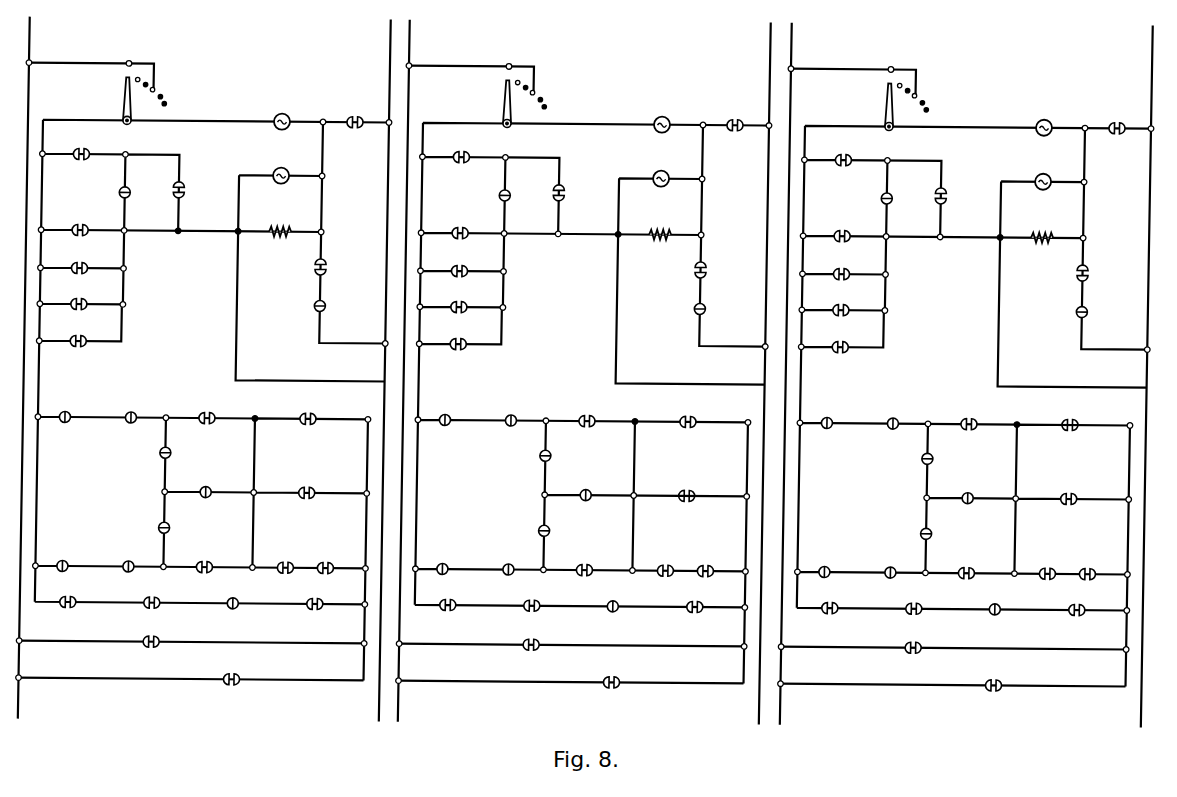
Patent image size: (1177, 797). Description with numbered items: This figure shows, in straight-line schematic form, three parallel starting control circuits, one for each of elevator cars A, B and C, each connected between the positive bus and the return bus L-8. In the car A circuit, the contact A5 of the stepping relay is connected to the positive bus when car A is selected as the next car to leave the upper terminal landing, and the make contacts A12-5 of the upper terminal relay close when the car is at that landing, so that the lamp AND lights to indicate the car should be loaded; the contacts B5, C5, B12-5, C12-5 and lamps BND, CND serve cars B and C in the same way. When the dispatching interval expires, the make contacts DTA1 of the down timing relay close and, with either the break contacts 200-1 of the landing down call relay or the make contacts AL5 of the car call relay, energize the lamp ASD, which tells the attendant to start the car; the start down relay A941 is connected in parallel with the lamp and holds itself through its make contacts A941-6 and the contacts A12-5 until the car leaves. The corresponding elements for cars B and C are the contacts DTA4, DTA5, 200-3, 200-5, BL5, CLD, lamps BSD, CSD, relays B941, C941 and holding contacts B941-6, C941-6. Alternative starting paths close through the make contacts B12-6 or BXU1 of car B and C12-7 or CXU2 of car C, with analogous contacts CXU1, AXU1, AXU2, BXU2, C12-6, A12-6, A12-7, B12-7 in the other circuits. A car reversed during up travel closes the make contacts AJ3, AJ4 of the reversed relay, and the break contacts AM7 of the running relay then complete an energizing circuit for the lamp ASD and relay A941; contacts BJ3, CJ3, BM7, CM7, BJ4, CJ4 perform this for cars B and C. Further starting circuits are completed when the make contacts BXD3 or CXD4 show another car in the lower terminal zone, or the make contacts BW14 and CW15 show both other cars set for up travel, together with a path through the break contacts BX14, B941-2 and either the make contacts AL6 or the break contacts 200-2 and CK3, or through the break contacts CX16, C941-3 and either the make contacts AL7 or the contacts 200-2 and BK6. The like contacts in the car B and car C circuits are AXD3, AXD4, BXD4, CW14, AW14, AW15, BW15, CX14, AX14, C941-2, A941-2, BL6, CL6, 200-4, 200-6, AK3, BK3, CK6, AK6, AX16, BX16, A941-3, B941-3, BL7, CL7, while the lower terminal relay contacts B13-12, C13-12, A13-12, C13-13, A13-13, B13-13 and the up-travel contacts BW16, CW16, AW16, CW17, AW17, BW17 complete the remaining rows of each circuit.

The bus L-8 is at (389, 31).
The contact of the stepping relay A5 is at (110, 89).
The selector switch B5 is at (508, 95).
The selector switch C5 is at (890, 98).
The lamp AND is at (284, 113).
The relay coil BND is at (647, 114).
The relay coil CND is at (1029, 117).
The make contacts of the upper terminal relay A12-5 is at (358, 111).
The contact B12-5 is at (734, 114).
The contact C12-5 is at (1116, 117).
The make contacts of the down timing relay DTA1 is at (92, 136).
The contact DTA4 is at (451, 147).
The contact DTA5 is at (833, 150).
The break contacts of the landing down call relay 200-1 is at (120, 192).
The contact 200-3 is at (471, 188).
The contact 200-5 is at (853, 191).
The make contacts of the car call relay AL5 is at (186, 192).
The contact BL5 is at (577, 184).
The contact CLD is at (960, 187).
The lamp ASD is at (279, 168).
The relay coil BSD is at (676, 168).
The relay coil CSD is at (1058, 171).
The start down relay A941 is at (279, 226).
The resistor B941 is at (650, 221).
The resistor C941 is at (1032, 224).
The make contacts of the upper zone relay BXU1 is at (92, 213).
The contact CXU1 is at (450, 223).
The contact AXU1 is at (832, 226).
The make contacts of the upper zone relay CXU2 is at (77, 265).
The contact AXU2 is at (449, 261).
The contact BXU2 is at (831, 264).
The make contacts of the upper terminal relay B12-6 is at (76, 302).
The contact C12-6 is at (451, 298).
The contact A12-6 is at (833, 301).
The make contacts of the upper terminal relay C12-7 is at (70, 332).
The contact A12-7 is at (450, 335).
The contact B12-7 is at (832, 338).
The make contacts of the reversed relay AJ3 is at (328, 268).
The contact BJ3 is at (717, 266).
The contact CJ3 is at (1099, 269).
The break contacts of the running relay AM7 is at (329, 304).
The contact BM7 is at (721, 305).
The contact CM7 is at (1103, 308).
The break contacts of the start down relay B941-2 is at (70, 413).
The contact C941-2 is at (452, 408).
The contact A941-2 is at (834, 411).
The break contacts BX14 is at (150, 404).
The contact CX14 is at (527, 408).
The contact AX14 is at (908, 412).
The make contacts of the car call relay AL6 is at (209, 414).
The contact BL6 is at (600, 409).
The contact CL6 is at (982, 412).
The make contacts of the lower zone relay BXD3 is at (309, 412).
The contact AXD3 is at (708, 409).
The contact AXD4 is at (685, 487).
The break contacts CK3 is at (166, 452).
The contact AK3 is at (522, 455).
The contact BK3 is at (904, 458).
The break contacts of the landing down call relay 200-2 is at (207, 489).
The contact 200-4 is at (577, 486).
The contact 200-6 is at (959, 489).
The make contacts of the lower zone relay CXD4 is at (305, 487).
The contact BXD4 is at (1088, 488).
The break contacts BK6 is at (177, 528).
The contact CK6 is at (565, 526).
The contact AK6 is at (947, 529).
The break contacts of the start down relay C941-3 is at (82, 553).
The contact A941-3 is at (451, 556).
The contact B941-3 is at (833, 559).
The break contacts CX16 is at (132, 573).
The contact AX16 is at (526, 581).
The contact BX16 is at (908, 584).
The make contacts of the car call relay AL7 is at (209, 562).
The contact BL7 is at (597, 557).
The contact CL7 is at (979, 560).
The make contacts BW14 is at (287, 563).
The contact CW14 is at (681, 558).
The contact AW14 is at (1062, 561).
The contact CW15 is at (316, 572).
The contact AW15 is at (707, 583).
The make contacts BW15 is at (1089, 586).
The contact B13-12 is at (70, 599).
The contact C13-12 is at (441, 594).
The contact A13-12 is at (823, 597).
The contact BW16 is at (157, 611).
The contact CW16 is at (507, 618).
The contact AW16 is at (889, 621).
The contact C13-13 is at (241, 599).
The contact A13-13 is at (617, 596).
The contact B13-13 is at (999, 599).
The contact CW17 is at (318, 610).
The contact AW17 is at (707, 620).
The contact BW17 is at (1089, 623).
The make contacts of the start down relay A941-6 is at (158, 650).
The contact B941-6 is at (499, 656).
The contact C941-6 is at (881, 659).
The make contacts of the reversed relay AJ4 is at (236, 676).
The contact BJ4 is at (624, 671).
The contact CJ4 is at (1007, 674).